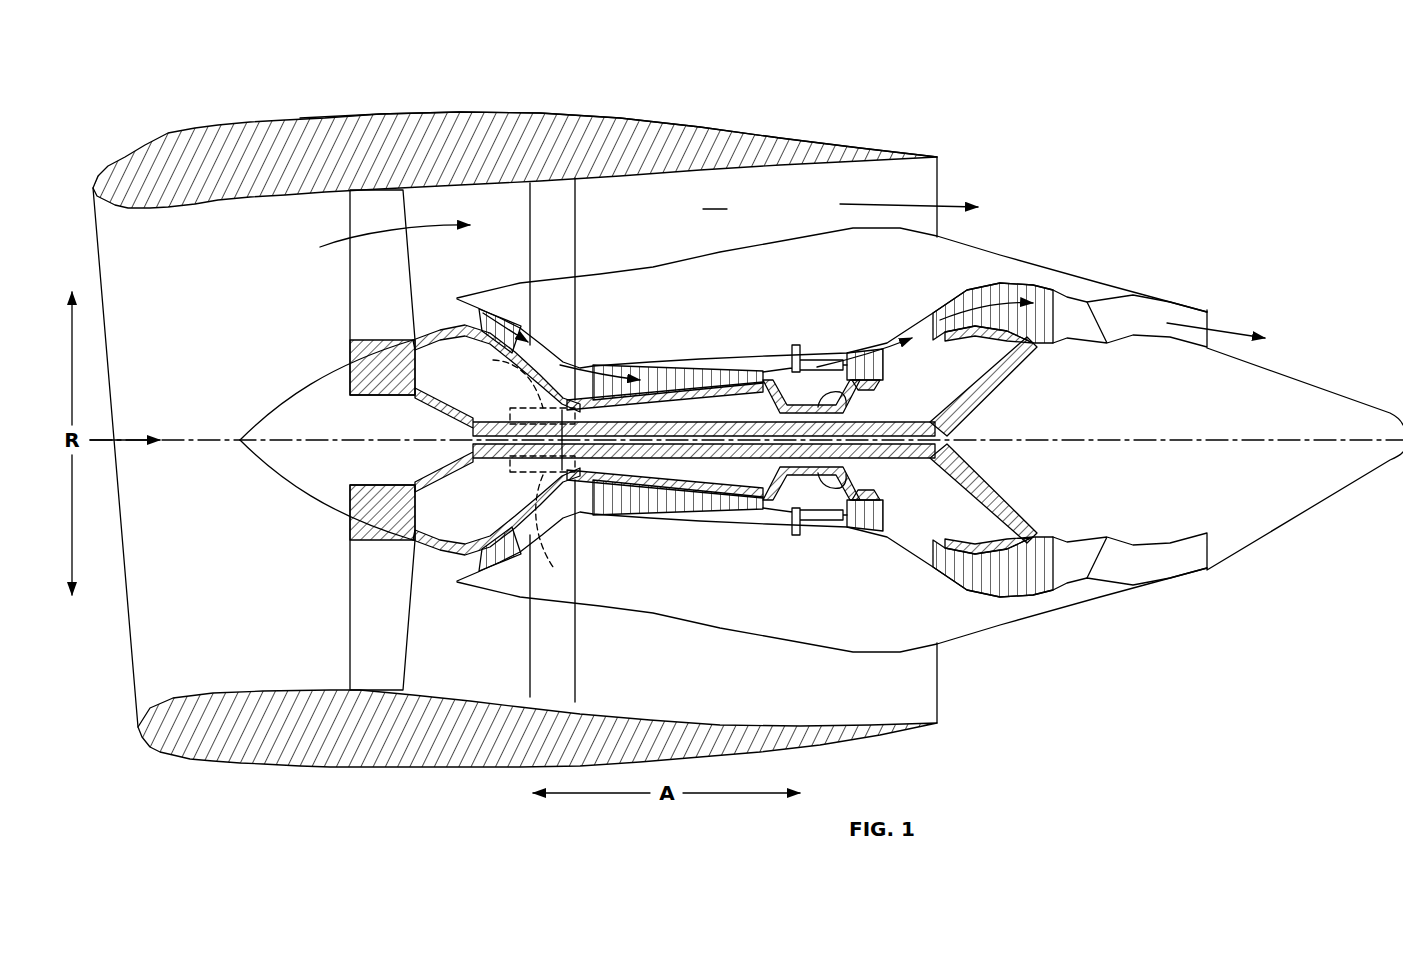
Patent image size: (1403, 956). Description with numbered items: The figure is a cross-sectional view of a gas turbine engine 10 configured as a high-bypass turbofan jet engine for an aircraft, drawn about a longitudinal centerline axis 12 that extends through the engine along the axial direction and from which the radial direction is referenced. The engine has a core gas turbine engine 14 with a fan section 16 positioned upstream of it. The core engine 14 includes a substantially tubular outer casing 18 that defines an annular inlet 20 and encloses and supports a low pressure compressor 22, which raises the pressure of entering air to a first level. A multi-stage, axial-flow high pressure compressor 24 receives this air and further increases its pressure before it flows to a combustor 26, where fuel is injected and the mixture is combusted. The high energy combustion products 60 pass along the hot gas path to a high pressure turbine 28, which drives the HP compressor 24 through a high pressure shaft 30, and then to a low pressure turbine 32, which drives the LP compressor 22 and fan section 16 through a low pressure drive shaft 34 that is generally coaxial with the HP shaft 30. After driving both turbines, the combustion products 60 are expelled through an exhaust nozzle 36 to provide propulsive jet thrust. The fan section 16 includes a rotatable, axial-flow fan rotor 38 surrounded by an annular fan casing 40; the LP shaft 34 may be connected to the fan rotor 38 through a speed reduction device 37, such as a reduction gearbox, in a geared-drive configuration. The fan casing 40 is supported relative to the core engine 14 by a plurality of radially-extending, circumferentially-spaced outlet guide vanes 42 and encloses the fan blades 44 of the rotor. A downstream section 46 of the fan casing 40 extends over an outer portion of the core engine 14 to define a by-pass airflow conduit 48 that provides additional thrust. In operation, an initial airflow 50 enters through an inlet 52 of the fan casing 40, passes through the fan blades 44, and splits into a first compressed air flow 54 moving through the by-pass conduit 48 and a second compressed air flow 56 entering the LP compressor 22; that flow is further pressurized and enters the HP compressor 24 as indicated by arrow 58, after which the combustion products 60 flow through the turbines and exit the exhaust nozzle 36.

The gas turbine engine 10 is at (1115, 135).
The centerline axis 12 is at (1100, 432).
The core gas turbine engine 14 is at (818, 303).
The fan section 16 is at (395, 100).
The outer casing 18 is at (755, 632).
The annular inlet 20 is at (468, 569).
The low pressure compressor 22 is at (530, 522).
The high pressure compressor 24 is at (612, 512).
The combustor 26 is at (814, 522).
The high pressure turbine 28 is at (880, 527).
The high pressure shaft 30 is at (815, 407).
The low pressure turbine 32 is at (1027, 600).
The low pressure drive shaft 34 is at (520, 408).
The exhaust nozzle 36 is at (1207, 318).
The speed reduction device 37 is at (515, 468).
The fan rotor 38 is at (413, 395).
The fan casing 40 is at (443, 770).
The outlet guide vanes 42 is at (575, 205).
The fan blades 44 is at (348, 633).
The downstream section 46 is at (785, 138).
The by-pass airflow conduit 48 is at (715, 196).
The initial airflow 50 is at (135, 437).
The inlet 52 is at (122, 688).
The first compressed air flow 54 is at (365, 232).
The second compressed air flow 56 is at (438, 302).
The flow into HP compressor 58 is at (597, 362).
The combustion products 60 is at (868, 352).